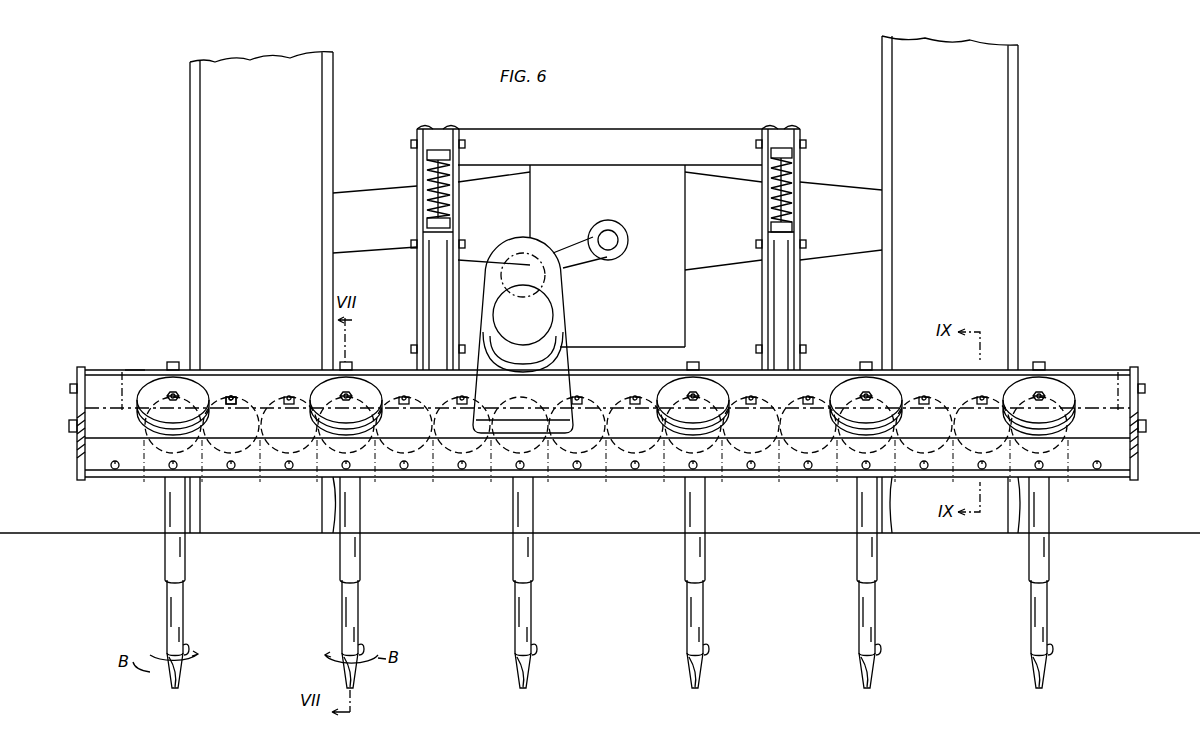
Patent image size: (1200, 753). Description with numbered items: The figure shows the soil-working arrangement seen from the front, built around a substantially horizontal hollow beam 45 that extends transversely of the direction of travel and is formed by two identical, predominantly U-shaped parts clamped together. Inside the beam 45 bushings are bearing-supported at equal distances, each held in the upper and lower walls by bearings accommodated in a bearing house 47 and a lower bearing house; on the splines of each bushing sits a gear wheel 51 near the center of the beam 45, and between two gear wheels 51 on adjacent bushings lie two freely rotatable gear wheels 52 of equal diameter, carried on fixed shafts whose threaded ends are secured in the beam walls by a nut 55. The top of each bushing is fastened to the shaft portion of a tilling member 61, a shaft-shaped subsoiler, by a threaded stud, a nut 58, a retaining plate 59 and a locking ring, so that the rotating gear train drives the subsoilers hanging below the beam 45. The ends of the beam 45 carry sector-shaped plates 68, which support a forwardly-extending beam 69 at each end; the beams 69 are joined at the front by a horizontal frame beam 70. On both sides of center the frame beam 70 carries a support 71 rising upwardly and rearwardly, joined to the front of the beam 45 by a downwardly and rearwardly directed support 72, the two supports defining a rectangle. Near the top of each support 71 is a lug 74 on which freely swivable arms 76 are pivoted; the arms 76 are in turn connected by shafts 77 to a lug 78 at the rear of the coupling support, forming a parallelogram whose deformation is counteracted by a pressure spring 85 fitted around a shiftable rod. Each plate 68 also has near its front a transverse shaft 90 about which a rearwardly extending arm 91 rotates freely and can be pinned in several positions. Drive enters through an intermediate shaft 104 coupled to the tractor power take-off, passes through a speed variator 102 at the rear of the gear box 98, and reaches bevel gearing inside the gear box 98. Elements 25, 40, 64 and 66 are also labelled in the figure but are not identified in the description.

The bolt 25 is at (411, 244).
The bolt 40 is at (697, 362).
The hollow beam 45 is at (610, 470).
The bearing house 47 is at (190, 392).
The gear wheel 51 is at (150, 432).
The gear wheel 52 is at (258, 392).
The nut 55 is at (234, 397).
The nut 58 is at (345, 393).
The retaining plate 59 is at (606, 465).
The tilling member 61 is at (196, 559).
The tine lower portion 64 is at (184, 618).
The tine tip 66 is at (170, 648).
The plate 68 is at (80, 478).
The forwardly-extending beam 69 is at (122, 370).
The frame beam 70 is at (145, 383).
The support 71 is at (438, 255).
The support 72 is at (430, 300).
The lug 74 is at (452, 226).
The arm 76 is at (423, 192).
The shaft 77 is at (411, 144).
The lug 78 is at (449, 126).
The pressure spring 85 is at (430, 182).
The shaft 90 is at (70, 389).
The arm 91 is at (69, 428).
The gear box 98 is at (570, 345).
The speed variator 102 is at (560, 305).
The intermediate shaft 104 is at (596, 232).